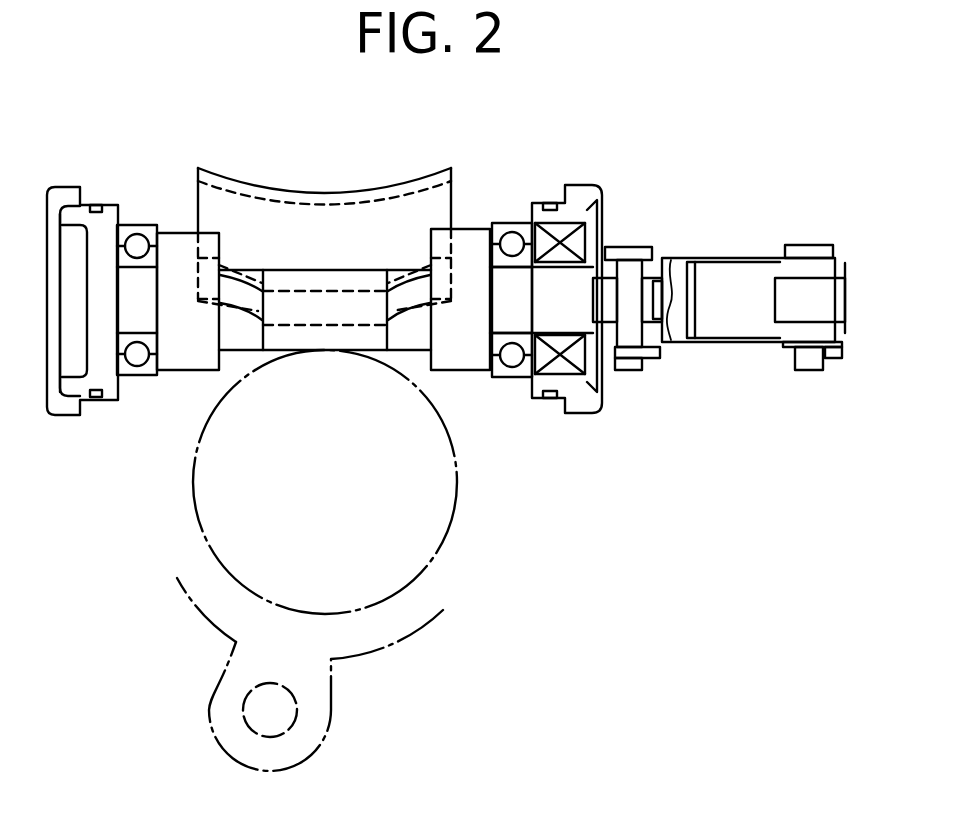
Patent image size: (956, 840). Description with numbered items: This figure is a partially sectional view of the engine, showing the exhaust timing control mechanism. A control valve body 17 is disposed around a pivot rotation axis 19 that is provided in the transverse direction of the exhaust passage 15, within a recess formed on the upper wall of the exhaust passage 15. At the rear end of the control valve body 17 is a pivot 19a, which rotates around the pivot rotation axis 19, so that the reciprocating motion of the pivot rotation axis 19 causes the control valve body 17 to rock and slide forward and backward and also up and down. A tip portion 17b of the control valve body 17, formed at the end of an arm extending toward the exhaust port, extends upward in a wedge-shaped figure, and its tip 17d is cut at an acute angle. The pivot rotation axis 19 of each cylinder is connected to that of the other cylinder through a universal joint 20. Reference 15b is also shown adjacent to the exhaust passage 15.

The exhaust passage 15 is at (453, 447).
The lever arm of member 15 15b is at (194, 503).
The control valve body 17 is at (281, 208).
The tip portion 17b is at (199, 190).
The tip 17d is at (268, 188).
The pivot rotation axis 19 is at (482, 228).
The pivot 19a is at (292, 318).
The universal joint 20 is at (713, 345).